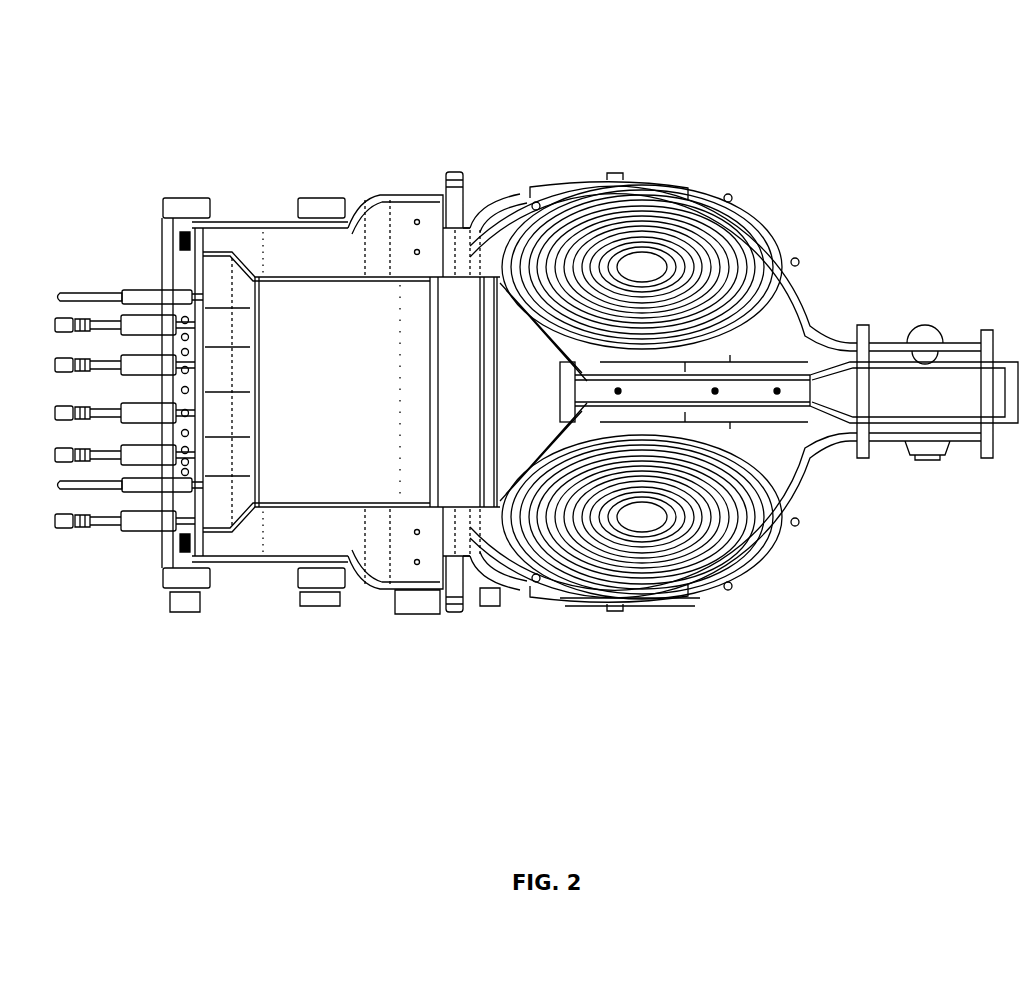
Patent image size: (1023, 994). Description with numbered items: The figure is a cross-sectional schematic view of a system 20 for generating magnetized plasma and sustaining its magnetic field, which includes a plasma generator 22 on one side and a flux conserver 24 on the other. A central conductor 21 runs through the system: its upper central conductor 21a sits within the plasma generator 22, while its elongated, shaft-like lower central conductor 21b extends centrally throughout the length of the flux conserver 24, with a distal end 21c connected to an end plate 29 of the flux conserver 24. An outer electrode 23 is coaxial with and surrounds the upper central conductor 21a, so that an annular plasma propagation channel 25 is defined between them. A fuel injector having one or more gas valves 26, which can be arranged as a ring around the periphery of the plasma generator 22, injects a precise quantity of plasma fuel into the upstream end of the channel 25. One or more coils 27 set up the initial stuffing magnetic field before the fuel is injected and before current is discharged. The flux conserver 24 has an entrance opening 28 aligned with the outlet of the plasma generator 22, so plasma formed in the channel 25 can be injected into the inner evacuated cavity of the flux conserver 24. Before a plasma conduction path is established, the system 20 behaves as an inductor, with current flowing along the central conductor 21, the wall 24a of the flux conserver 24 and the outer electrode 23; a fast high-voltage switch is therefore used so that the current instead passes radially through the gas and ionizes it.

The system for generating magnetized plasma 20 is at (838, 121).
The central conductor 21 is at (472, 442).
The upper central conductor 21a is at (360, 452).
The lower central conductor 21b is at (735, 397).
The distal end of the lower central conductor 21c is at (883, 387).
The plasma generator 22 is at (217, 140).
The outer electrode 23 is at (407, 198).
The flux conserver 24 is at (658, 638).
The wall of the flux conserver 24a is at (757, 229).
The annular plasma propagation channel 25 is at (295, 260).
The gas valves 26 is at (263, 241).
The coils 27 is at (303, 582).
The entrance opening 28 is at (483, 245).
The end plate 29 is at (966, 338).